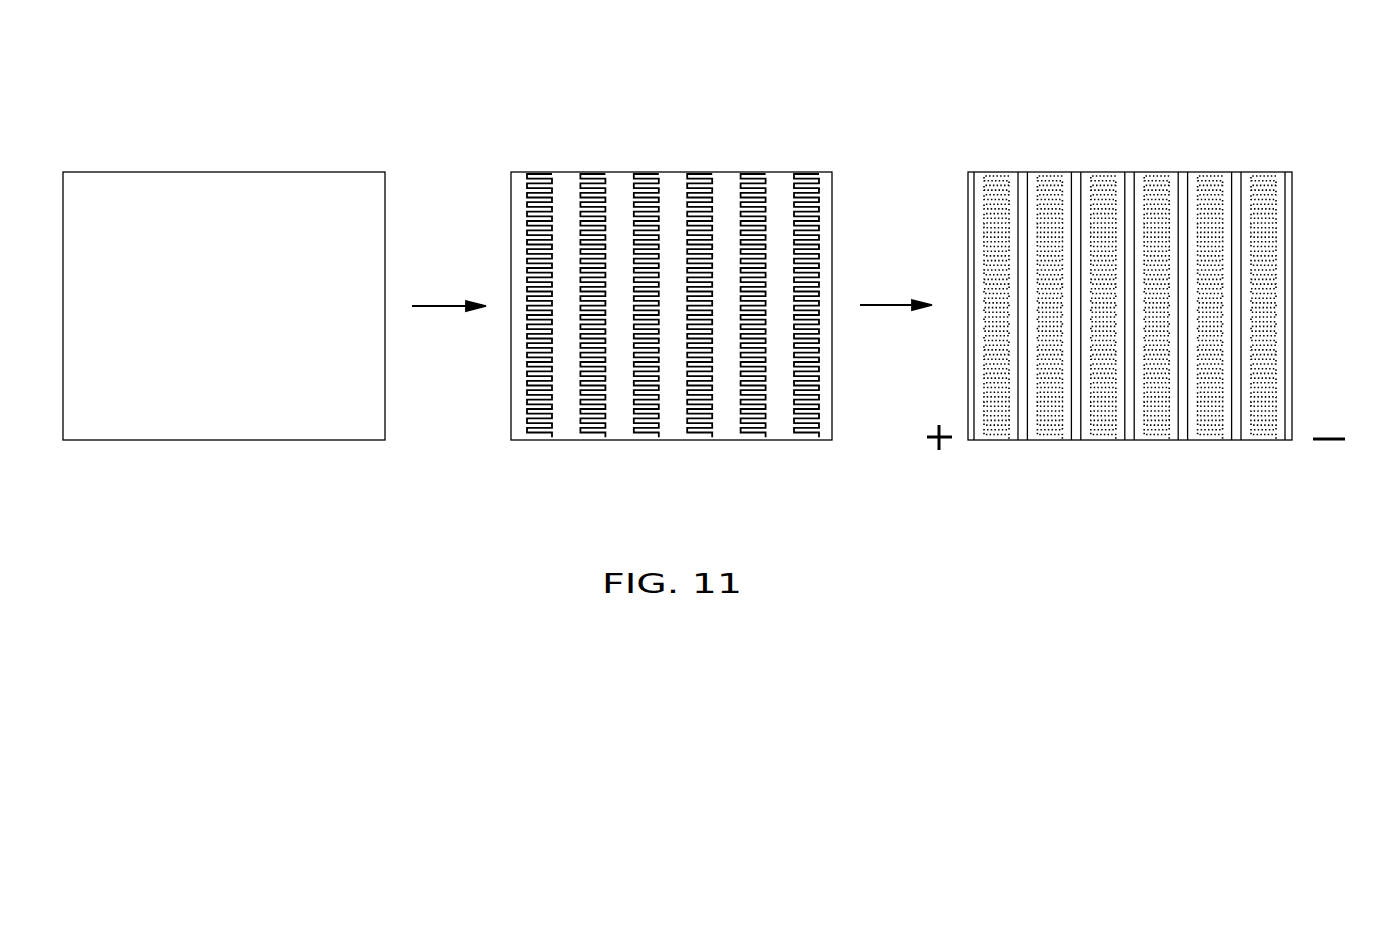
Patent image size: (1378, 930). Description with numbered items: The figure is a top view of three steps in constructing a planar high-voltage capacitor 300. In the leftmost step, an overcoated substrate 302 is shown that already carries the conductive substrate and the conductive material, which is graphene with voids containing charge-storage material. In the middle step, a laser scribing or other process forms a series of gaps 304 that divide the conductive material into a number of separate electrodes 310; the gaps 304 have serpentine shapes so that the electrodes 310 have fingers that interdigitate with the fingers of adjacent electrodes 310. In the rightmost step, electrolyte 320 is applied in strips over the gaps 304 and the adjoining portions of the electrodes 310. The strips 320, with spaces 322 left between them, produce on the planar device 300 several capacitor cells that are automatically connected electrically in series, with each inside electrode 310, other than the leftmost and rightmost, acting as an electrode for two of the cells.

The planar high-voltage capacitor 300 is at (1095, 150).
The overcoated substrate 302 is at (252, 172).
The gaps 304 is at (997, 440).
The electrodes 310 is at (521, 172).
The electrolyte strips 320 is at (1002, 172).
The spaces 322 is at (1023, 158).